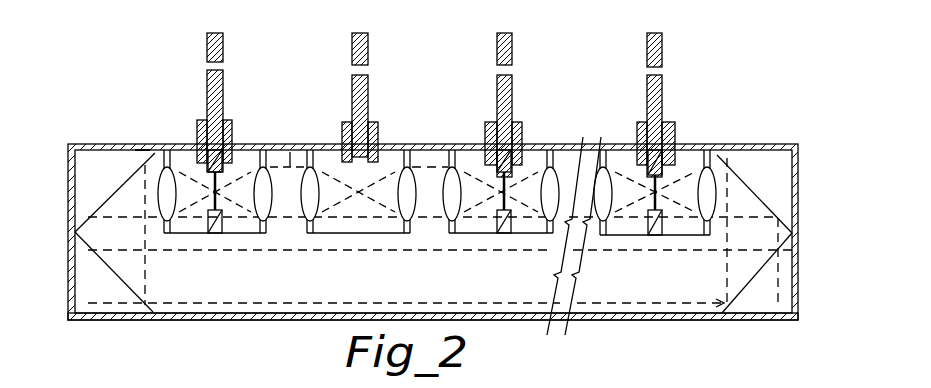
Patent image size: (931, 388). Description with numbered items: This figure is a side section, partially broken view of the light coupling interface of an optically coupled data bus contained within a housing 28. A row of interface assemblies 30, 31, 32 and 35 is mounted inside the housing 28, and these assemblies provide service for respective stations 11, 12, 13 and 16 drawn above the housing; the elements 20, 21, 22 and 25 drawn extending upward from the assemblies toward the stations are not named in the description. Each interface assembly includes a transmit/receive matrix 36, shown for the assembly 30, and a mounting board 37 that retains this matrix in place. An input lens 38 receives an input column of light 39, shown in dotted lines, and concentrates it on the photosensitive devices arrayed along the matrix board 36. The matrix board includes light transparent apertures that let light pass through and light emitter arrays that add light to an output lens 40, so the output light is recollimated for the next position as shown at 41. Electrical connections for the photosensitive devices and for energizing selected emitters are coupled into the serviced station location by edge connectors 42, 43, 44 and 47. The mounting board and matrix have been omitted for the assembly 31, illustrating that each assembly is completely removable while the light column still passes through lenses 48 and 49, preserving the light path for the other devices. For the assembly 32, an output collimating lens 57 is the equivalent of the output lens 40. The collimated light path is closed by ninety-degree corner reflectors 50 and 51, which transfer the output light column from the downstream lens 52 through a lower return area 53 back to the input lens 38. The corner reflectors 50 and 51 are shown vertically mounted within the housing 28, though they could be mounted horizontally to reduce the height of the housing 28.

The station 11 is at (207, 44).
The station 12 is at (353, 40).
The station 13 is at (498, 40).
The station 16 is at (657, 50).
The mirror drive shaft 20 is at (200, 120).
The mirror drive shaft 21 is at (346, 120).
The mirror drive shaft 22 is at (491, 120).
The mirror drive shaft 25 is at (645, 120).
The housing 28 is at (447, 234).
The interface assembly 30 is at (212, 198).
The interface assembly 31 is at (358, 219).
The interface assembly 32 is at (498, 219).
The interface assembly 35 is at (670, 198).
The transmit/receive matrix 36 is at (208, 192).
The mounting board 37 is at (212, 228).
The input lens 38 is at (180, 172).
The input column of light 39 is at (140, 140).
The output lens 40 is at (252, 160).
The recollimated output light 41 is at (290, 152).
The edge connector 42 is at (240, 147).
The edge connector 43 is at (378, 147).
The edge connector 44 is at (524, 150).
The edge connector 47 is at (677, 150).
The lens 48 is at (318, 203).
The lens 49 is at (400, 212).
The corner reflector 50 is at (758, 196).
The corner reflector 51 is at (112, 193).
The downstream lens 52 is at (712, 160).
The lower return area 53 is at (672, 323).
The output collimating lens 57 is at (545, 212).